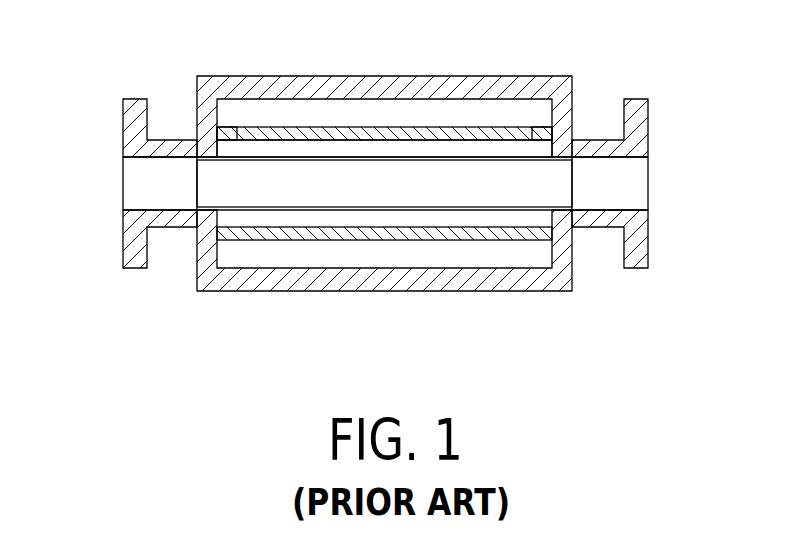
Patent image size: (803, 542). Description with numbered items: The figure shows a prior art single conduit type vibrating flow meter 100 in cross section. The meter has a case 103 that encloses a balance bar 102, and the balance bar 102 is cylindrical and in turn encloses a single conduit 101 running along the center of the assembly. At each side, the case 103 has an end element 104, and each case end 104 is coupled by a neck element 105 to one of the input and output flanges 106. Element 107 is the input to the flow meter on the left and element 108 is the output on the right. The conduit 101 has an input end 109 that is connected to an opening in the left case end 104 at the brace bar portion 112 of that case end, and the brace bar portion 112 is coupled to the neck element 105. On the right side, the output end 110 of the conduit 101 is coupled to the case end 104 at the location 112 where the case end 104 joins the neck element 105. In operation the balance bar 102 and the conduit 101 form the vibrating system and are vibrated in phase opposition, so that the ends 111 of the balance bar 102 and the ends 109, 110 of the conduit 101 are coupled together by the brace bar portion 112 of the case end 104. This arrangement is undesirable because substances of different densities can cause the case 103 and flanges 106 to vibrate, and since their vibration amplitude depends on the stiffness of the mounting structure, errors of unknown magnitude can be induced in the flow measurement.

The prior art semiconductor device 100 is at (420, 48).
The conduit 101 is at (368, 198).
The balance bar 102 is at (338, 120).
The case 103 is at (487, 77).
The end element 104 is at (197, 90).
The neck element 105 is at (180, 140).
The flange 106 is at (131, 100).
The input 107 is at (131, 182).
The output 108 is at (627, 183).
The input end 109 is at (197, 193).
The output end 110 is at (573, 190).
The ends of balance bar 111 is at (222, 127).
The brace bar portion 112 is at (218, 147).